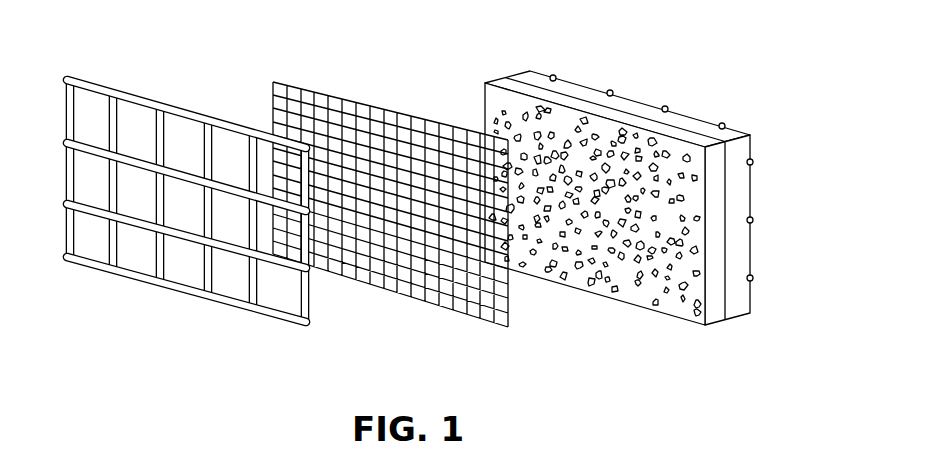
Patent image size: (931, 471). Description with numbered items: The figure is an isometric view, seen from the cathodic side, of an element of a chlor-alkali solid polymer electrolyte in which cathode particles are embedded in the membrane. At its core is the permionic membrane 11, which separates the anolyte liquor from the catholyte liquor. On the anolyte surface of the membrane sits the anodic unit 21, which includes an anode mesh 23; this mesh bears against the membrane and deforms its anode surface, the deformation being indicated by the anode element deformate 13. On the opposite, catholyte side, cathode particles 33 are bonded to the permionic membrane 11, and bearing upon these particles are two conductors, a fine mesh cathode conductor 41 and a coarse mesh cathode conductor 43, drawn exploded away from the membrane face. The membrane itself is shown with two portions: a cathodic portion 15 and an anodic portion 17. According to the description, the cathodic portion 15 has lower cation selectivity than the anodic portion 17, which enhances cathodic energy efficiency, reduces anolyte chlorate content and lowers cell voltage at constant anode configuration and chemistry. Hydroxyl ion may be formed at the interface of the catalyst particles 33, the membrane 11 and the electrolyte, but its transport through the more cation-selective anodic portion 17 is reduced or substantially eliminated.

The permionic membrane 11 is at (750, 262).
The anode element deformate 13 is at (610, 92).
The cathodic portion 15 is at (713, 318).
The anodic portion 17 is at (706, 350).
The anodic unit 21 is at (651, 219).
The anode mesh 23 is at (723, 124).
The cathode particles 33 is at (633, 287).
The fine mesh cathode conductor 41 is at (367, 106).
The coarse mesh cathode conductor 43 is at (143, 97).